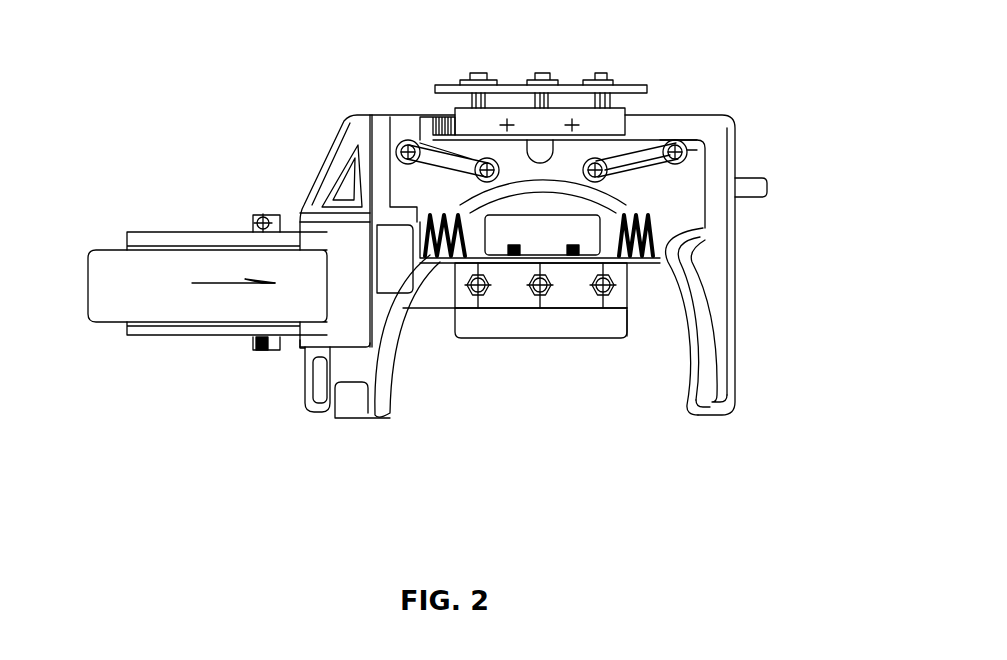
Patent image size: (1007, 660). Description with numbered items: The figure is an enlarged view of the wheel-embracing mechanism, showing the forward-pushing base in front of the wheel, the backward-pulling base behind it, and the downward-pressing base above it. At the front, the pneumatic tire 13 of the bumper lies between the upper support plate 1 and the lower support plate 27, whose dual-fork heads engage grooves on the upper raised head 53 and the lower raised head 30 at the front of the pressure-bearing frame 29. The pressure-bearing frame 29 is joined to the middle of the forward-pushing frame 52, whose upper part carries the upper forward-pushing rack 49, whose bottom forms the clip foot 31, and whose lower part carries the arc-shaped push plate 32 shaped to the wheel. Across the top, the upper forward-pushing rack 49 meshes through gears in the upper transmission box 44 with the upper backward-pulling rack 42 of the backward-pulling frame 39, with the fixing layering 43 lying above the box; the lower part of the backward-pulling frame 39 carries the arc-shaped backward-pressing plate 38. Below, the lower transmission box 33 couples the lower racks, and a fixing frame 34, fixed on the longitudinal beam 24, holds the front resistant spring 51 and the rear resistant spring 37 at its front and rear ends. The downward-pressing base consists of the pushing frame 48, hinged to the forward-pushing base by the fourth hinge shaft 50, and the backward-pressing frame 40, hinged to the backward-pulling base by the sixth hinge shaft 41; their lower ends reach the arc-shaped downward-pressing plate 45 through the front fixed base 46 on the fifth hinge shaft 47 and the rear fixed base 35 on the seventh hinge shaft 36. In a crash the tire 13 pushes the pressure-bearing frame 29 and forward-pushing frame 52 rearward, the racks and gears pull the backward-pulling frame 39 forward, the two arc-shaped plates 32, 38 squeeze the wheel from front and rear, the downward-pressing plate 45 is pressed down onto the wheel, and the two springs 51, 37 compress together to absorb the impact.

The upper support plate 1 is at (160, 240).
The pneumatic tire 13 is at (123, 275).
The longitudinal beam 24 is at (437, 295).
The lower support plate 27 is at (208, 332).
The pressure-bearing frame 29 is at (340, 273).
The lower raised head 30 is at (300, 345).
The clip foot 31 is at (322, 412).
The arc-shaped push plate 32 is at (367, 418).
The lower transmission box 33 is at (475, 327).
The fixing frame 34 is at (532, 233).
The rear fixed base 35 is at (570, 257).
The seventh hinge shaft 36 is at (580, 308).
The rear resistant spring 37 is at (640, 308).
The arc-shaped backward-pressing plate 38 is at (627, 327).
The backward-pulling frame 39 is at (713, 275).
The backward-pressing frame 40 is at (637, 157).
The sixth hinge shaft 41 is at (688, 128).
The upper backward-pulling rack 42 is at (678, 126).
The fixing layering 43 is at (647, 85).
The upper transmission box 44 is at (605, 120).
The arc-shaped downward-pressing plate 45 is at (538, 180).
The front fixed base 46 is at (540, 150).
The fifth hinge shaft 47 is at (508, 158).
The pushing frame 48 is at (467, 140).
The upper forward-pushing rack 49 is at (432, 127).
The fourth hinge shaft 50 is at (400, 142).
The front resistant spring 51 is at (380, 190).
The forward-pushing frame 52 is at (358, 170).
The upper raised head 53 is at (310, 233).